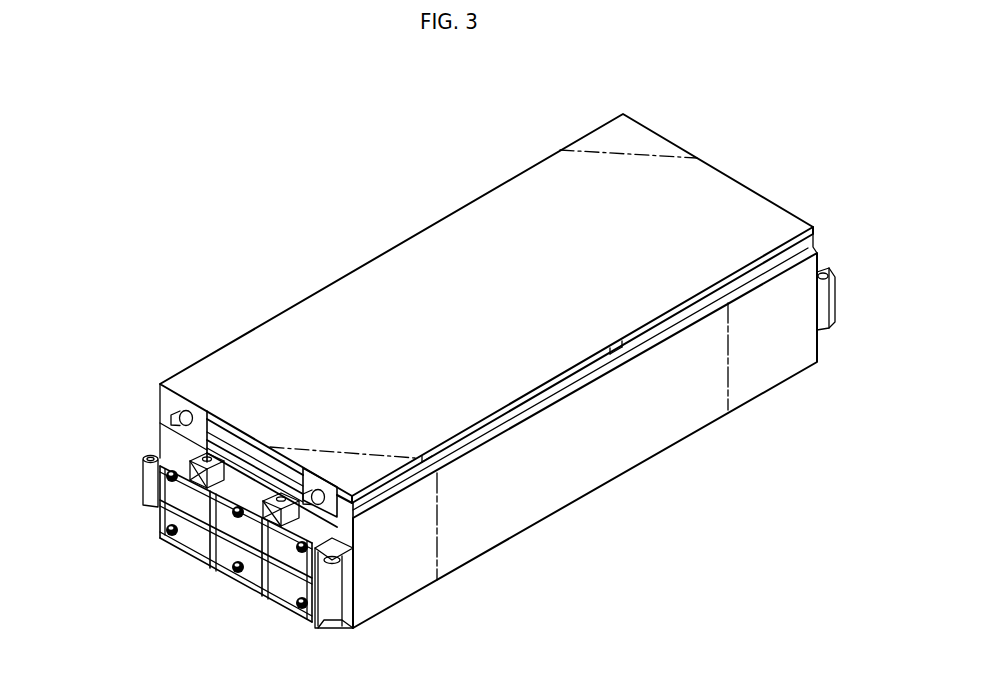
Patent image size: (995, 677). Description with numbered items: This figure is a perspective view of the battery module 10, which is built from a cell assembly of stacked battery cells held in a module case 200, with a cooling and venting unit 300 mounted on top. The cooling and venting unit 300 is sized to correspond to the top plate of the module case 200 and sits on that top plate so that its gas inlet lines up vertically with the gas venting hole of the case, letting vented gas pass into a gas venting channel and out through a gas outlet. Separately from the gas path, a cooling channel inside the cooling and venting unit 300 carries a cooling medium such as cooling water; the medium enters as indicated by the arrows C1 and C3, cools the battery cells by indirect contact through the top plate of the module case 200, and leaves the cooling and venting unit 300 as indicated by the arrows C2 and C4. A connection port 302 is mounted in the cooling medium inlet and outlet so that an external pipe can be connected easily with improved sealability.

The battery module 10 is at (228, 86).
The cooling and venting unit 300 is at (464, 320).
The connection port 302 is at (170, 404).
The module case 200 is at (489, 431).
The cooling medium entry direction C1 is at (172, 430).
The cooling medium exit direction C2 is at (672, 137).
The cooling medium entry direction C3 is at (212, 560).
The cooling medium exit direction C4 is at (806, 216).